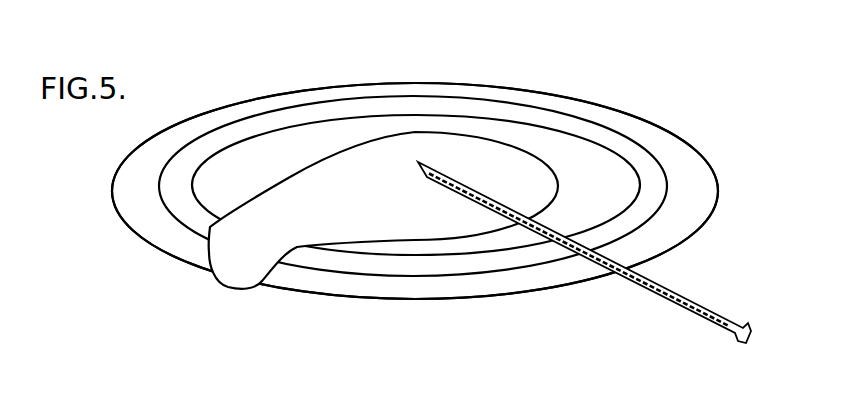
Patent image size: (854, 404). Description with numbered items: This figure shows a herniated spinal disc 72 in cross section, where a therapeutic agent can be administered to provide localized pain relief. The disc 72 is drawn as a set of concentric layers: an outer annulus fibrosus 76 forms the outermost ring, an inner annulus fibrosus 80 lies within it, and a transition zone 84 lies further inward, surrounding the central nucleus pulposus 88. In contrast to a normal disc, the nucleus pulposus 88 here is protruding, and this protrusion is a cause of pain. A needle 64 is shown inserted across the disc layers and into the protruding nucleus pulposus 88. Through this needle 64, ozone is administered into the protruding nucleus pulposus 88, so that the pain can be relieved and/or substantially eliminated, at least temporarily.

The spinal disc 72 is at (639, 99).
The outer annulus fibrosus 76 is at (263, 107).
The inner annulus fibrosus 80 is at (367, 107).
The transition zone 84 is at (511, 130).
The nucleus pulposus 88 is at (400, 208).
The needle 64 is at (672, 302).